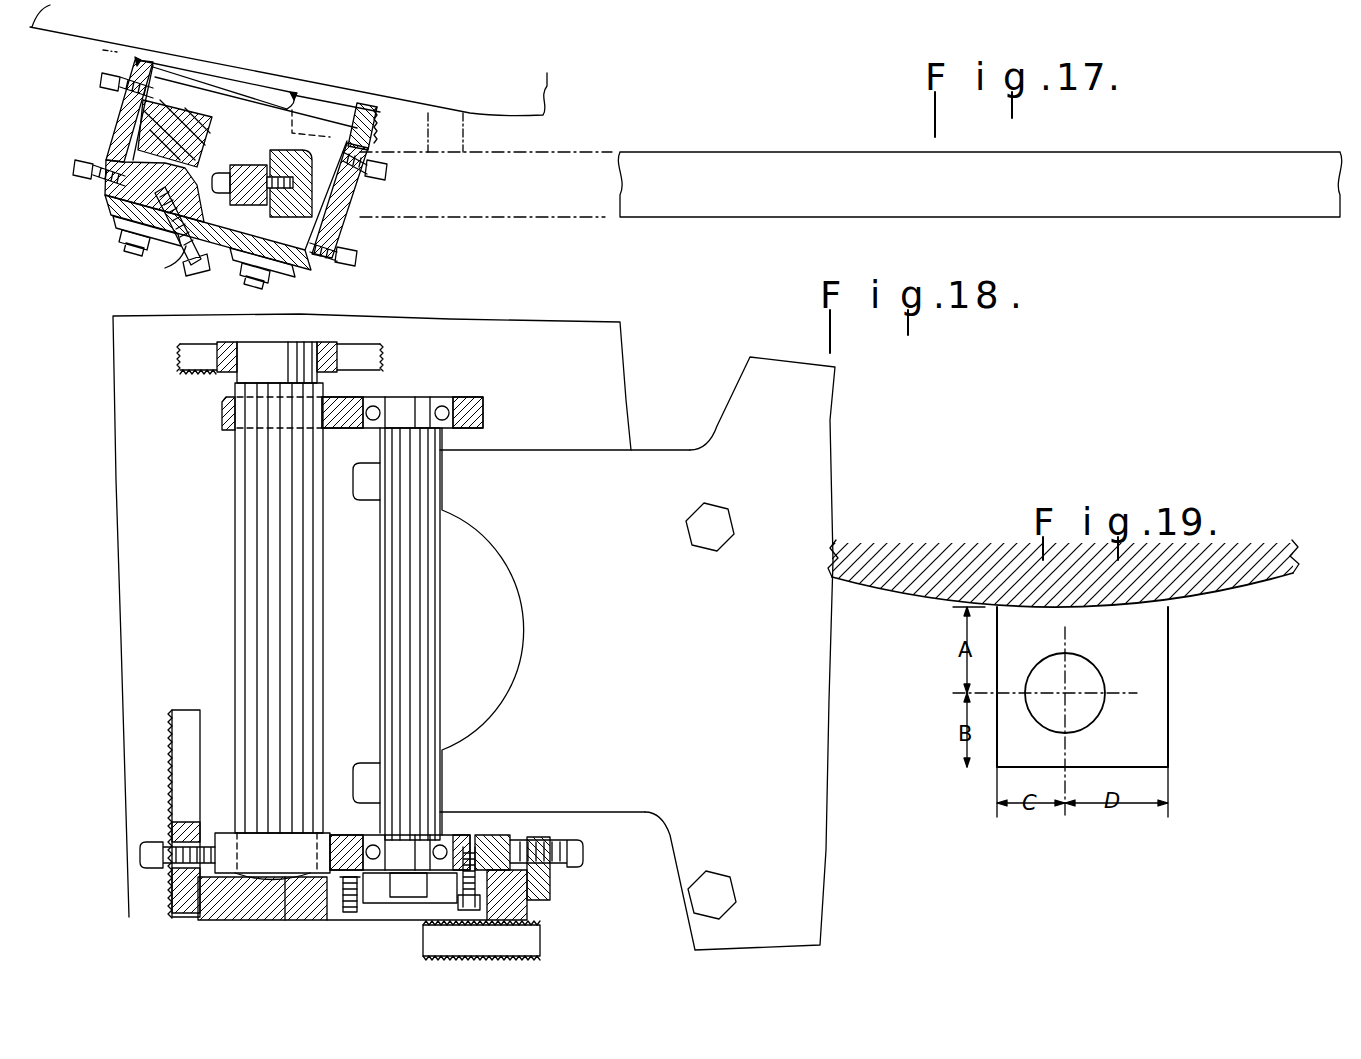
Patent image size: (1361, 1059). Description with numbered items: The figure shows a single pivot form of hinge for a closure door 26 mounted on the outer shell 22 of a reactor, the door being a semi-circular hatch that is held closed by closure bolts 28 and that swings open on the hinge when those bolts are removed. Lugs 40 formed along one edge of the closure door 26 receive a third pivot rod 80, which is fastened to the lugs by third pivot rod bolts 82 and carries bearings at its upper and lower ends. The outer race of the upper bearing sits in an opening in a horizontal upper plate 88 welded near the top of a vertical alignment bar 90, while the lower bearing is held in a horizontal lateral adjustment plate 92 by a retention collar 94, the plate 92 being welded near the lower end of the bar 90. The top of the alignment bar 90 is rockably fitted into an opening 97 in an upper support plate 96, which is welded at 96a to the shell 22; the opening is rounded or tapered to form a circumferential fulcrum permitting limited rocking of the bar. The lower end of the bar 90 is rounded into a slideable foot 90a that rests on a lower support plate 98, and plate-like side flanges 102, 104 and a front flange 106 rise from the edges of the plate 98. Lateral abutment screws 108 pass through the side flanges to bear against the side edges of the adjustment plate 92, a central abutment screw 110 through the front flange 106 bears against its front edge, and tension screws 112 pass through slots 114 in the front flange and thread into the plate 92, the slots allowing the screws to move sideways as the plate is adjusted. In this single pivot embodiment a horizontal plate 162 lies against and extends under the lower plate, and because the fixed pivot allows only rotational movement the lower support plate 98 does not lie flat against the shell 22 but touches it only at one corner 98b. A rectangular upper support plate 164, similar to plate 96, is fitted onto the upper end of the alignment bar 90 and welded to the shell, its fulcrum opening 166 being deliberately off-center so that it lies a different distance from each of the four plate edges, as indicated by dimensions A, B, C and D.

In FIG. 17, the outer shell 22 is at (552, 102).
In FIG. 18, the outer shell 22 is at (549, 327).
In FIG. 19, the outer shell 22 is at (1231, 590).
In FIG. 17, the closure door 26 is at (670, 220).
In FIG. 18, the closure door 26 is at (745, 375).
In FIG. 18, the closure bolts 28 is at (722, 873).
In FIG. 18, the lugs 40 is at (467, 740).
In FIG. 18, the third pivot rod 80 is at (390, 582).
In FIG. 18, the third pivot rod bolts 82 is at (366, 765).
In FIG. 18, the upper plate 88 is at (472, 395).
In FIG. 17, the vertical alignment bar 90 is at (215, 141).
In FIG. 18, the vertical alignment bar 90 is at (236, 556).
In FIG. 18, the slideable foot 90a is at (278, 915).
In FIG. 18, the lateral adjustment plate 92 is at (495, 833).
In FIG. 18, the retention collar 94 is at (364, 914).
In FIG. 18, the upper support plate 96 is at (385, 353).
In FIG. 18, the weld 96a is at (200, 411).
In FIG. 18, the opening 97 is at (314, 342).
In FIG. 17, the lower support plate 98 is at (262, 98).
In FIG. 18, the lower support plate 98 is at (228, 912).
In FIG. 17, the corner 98b is at (137, 58).
In FIG. 17, the side flange 102 is at (117, 132).
In FIG. 18, the side flange 102 is at (175, 730).
In FIG. 17, the side flange 104 is at (345, 227).
In FIG. 18, the side flange 104 is at (547, 835).
In FIG. 17, the front flange 106 is at (154, 229).
In FIG. 17, the lateral abutment screws 108 is at (358, 259).
In FIG. 18, the lateral abutment screws 108 is at (572, 865).
In FIG. 17, the central abutment screw 110 is at (199, 276).
In FIG. 17, the tension screws 112 is at (262, 289).
In FIG. 17, the slots 114 is at (296, 271).
In FIG. 17, the horizontal plate 162 is at (350, 113).
In FIG. 18, the horizontal plate 162 is at (540, 937).
In FIG. 19, the upper support plate 164 is at (1170, 738).
In FIG. 18, the opening 166 is at (237, 342).
In FIG. 19, the opening 166 is at (1093, 672).